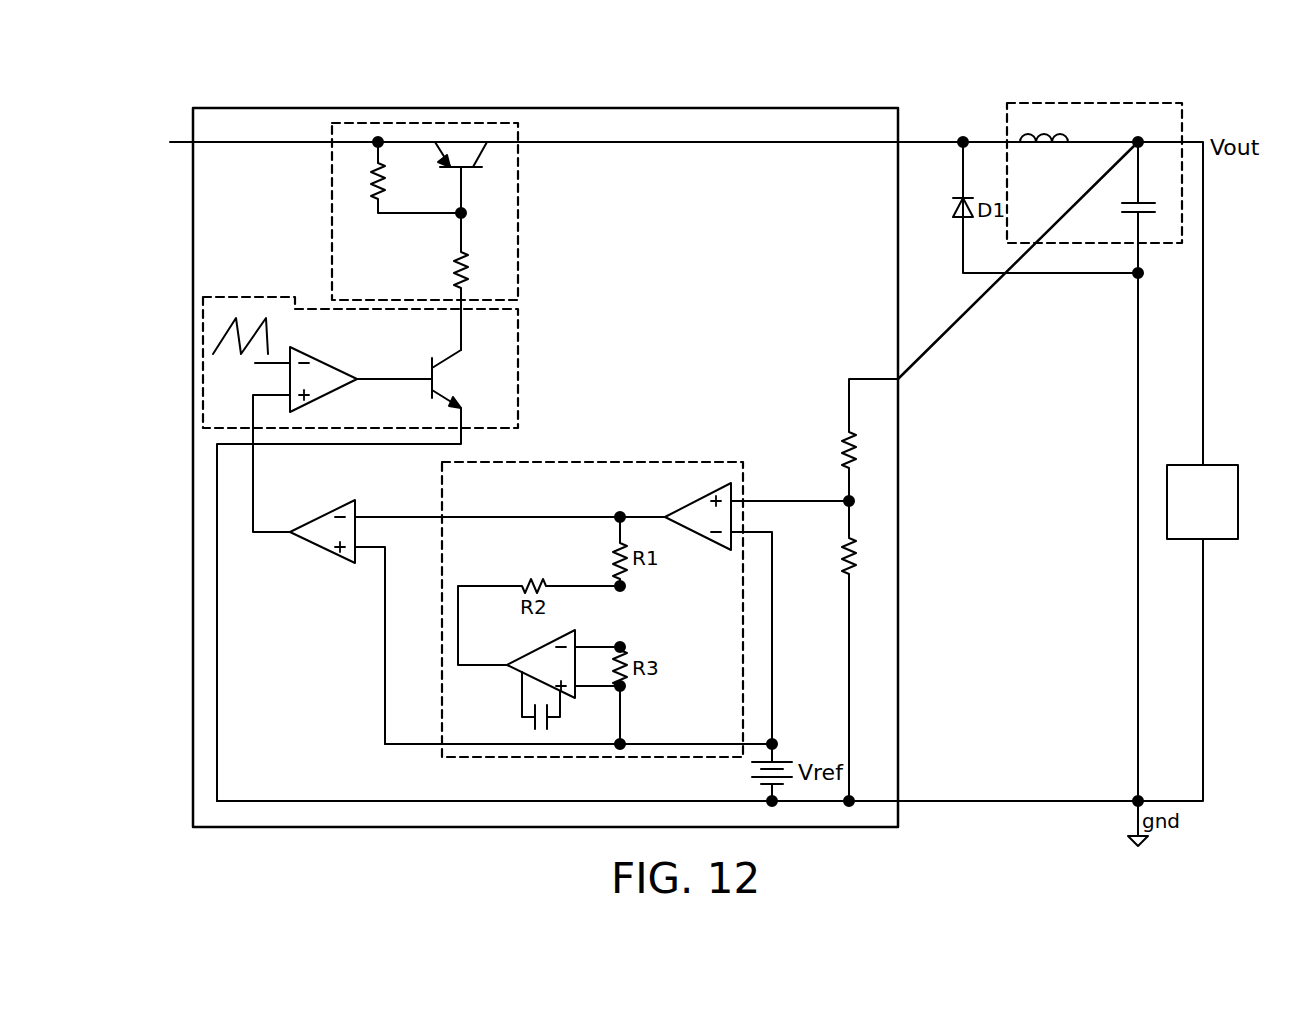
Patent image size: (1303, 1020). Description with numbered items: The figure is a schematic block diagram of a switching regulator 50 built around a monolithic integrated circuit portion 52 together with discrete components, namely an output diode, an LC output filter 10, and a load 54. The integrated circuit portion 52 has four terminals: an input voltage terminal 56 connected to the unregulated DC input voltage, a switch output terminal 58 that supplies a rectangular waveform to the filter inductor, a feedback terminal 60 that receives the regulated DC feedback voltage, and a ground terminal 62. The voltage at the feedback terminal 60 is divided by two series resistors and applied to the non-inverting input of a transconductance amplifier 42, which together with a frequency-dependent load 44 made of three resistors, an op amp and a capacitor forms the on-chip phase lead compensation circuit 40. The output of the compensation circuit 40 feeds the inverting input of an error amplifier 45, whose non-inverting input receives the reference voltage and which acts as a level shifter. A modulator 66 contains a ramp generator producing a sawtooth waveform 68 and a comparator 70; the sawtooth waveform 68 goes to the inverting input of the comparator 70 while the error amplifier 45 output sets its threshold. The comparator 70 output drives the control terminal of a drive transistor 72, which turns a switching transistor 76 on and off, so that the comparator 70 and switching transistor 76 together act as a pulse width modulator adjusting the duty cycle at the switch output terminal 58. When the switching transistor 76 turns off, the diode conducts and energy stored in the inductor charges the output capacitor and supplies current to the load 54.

The LC output filter 10 is at (1128, 103).
The phase lead compensation circuit 40 is at (607, 462).
The transconductance amplifier 42 is at (700, 532).
The frequency-dependent load 44 is at (512, 668).
The error amplifier 45 is at (332, 541).
The switching regulator 50 is at (913, 95).
The monolithic integrated circuit portion 52 is at (710, 104).
The load 54 is at (1240, 502).
The input voltage terminal 56 is at (193, 142).
The switch output terminal 58 is at (898, 142).
The feedback terminal 60 is at (898, 379).
The ground terminal 62 is at (900, 803).
The modulator 66 is at (267, 297).
The sawtooth waveform 68 is at (213, 339).
The comparator 70 is at (318, 389).
The drive transistor 72 is at (447, 368).
The switching transistor 76 is at (482, 153).